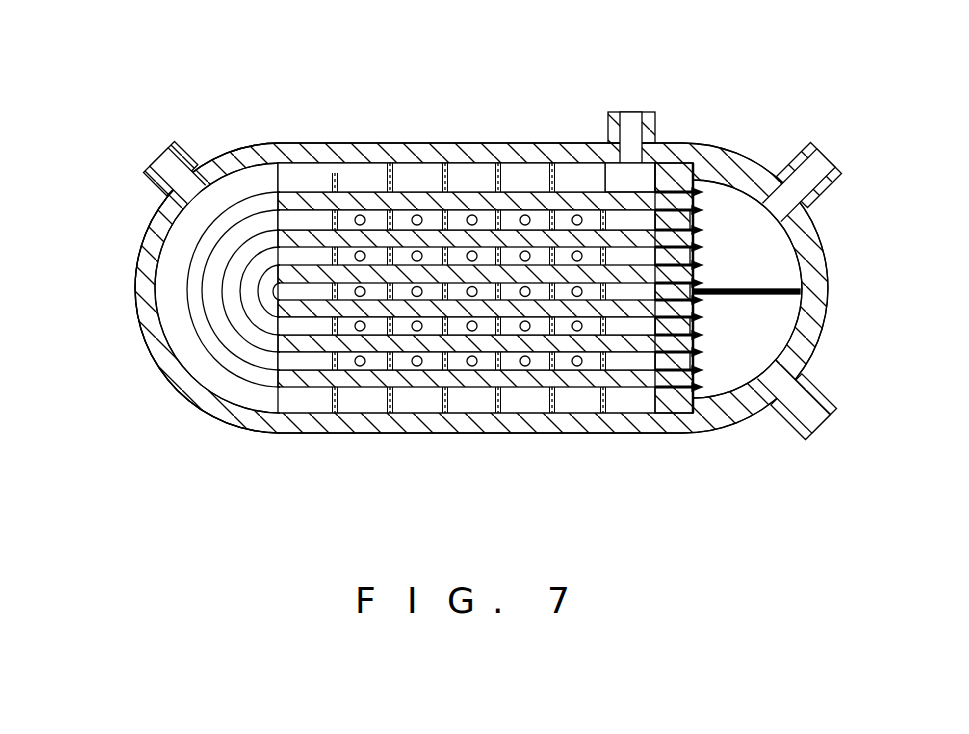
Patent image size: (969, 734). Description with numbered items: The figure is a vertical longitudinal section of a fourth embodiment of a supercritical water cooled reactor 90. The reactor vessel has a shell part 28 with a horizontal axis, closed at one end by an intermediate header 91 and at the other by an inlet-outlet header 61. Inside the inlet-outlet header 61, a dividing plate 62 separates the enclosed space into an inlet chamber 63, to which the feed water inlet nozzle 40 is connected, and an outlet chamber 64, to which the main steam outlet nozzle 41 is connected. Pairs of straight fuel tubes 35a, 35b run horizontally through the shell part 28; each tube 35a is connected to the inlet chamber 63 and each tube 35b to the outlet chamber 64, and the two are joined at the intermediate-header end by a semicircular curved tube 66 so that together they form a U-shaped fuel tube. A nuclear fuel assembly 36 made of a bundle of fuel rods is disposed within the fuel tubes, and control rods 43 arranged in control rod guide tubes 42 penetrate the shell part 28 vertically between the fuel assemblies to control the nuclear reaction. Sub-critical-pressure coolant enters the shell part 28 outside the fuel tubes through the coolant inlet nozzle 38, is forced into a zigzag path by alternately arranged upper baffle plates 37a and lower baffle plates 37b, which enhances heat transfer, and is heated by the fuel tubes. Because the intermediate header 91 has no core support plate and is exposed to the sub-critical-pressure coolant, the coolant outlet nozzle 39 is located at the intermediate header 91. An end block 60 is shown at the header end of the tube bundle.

The heat exchanger / reactor assembly 90 is at (770, 46).
The shell part 28 is at (463, 433).
The intermediate header 91 is at (133, 290).
The coolant outlet nozzle 39 is at (129, 127).
The coolant inlet nozzle 38 is at (630, 63).
The feed water inlet nozzle 40 is at (865, 122).
The main steam outlet nozzle 41 is at (826, 390).
The nuclear fuel assembly 36 is at (617, 345).
The straight fuel tube 35a is at (348, 217).
The straight fuel tube 35b is at (527, 345).
The upper baffle plate 37a is at (388, 405).
The lower baffle plate 37b is at (332, 405).
The control rod guide tube 42 is at (525, 214).
The control rod 43 is at (468, 343).
The semicircular curved tube 66 is at (270, 303).
The end block 60 is at (692, 410).
The dividing plate 62 is at (737, 296).
The inlet-outlet header 61 is at (818, 294).
The inlet chamber 63 is at (765, 240).
The outlet chamber 64 is at (770, 336).